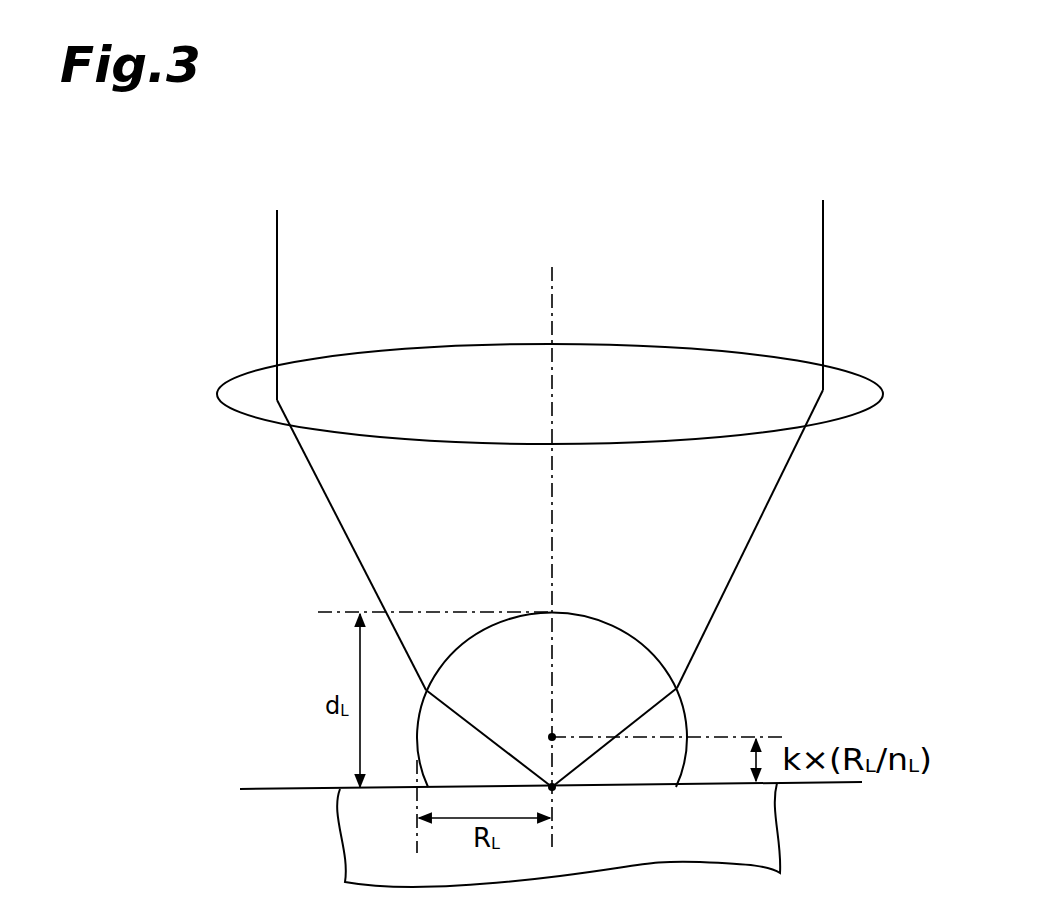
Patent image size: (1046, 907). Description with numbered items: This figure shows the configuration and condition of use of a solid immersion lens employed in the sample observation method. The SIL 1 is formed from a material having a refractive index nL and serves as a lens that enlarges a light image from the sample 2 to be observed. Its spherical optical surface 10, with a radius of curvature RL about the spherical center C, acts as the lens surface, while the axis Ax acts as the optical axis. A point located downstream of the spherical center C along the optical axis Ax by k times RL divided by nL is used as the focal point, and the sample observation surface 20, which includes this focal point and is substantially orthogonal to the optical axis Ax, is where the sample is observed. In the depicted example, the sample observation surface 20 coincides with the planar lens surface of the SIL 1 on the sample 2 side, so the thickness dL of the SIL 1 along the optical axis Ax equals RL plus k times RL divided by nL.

The solid immersion lens 1 is at (677, 717).
The sample 2 is at (760, 831).
The spherical optical surface 10 is at (636, 636).
The sample observation surface 20 is at (299, 788).
The optical axis Ax is at (552, 537).
The spherical center C is at (555, 740).